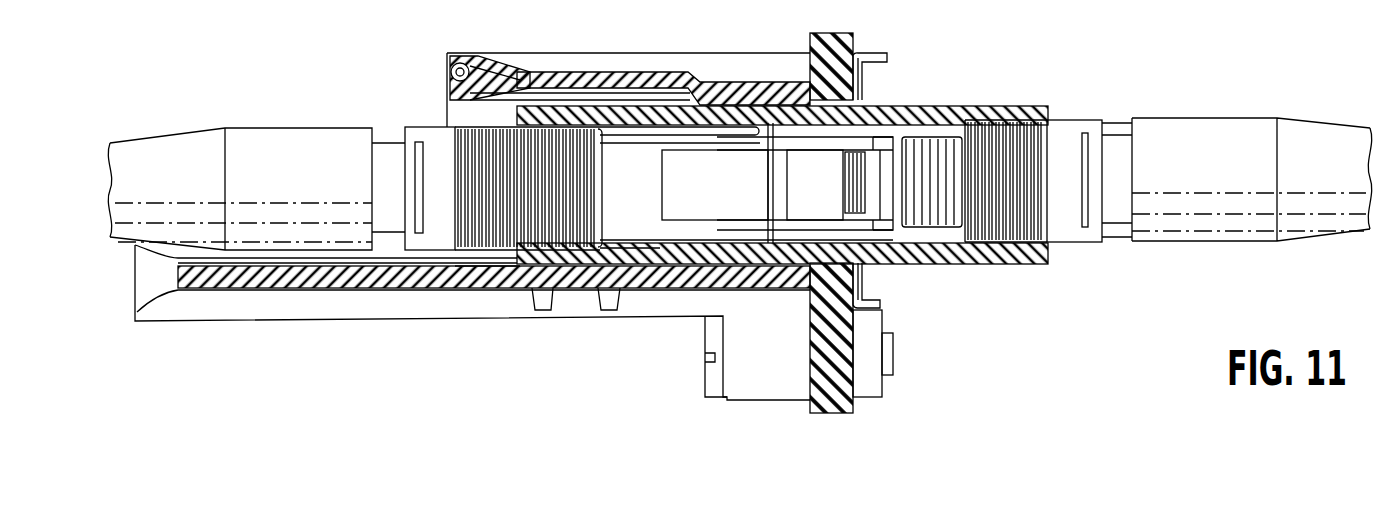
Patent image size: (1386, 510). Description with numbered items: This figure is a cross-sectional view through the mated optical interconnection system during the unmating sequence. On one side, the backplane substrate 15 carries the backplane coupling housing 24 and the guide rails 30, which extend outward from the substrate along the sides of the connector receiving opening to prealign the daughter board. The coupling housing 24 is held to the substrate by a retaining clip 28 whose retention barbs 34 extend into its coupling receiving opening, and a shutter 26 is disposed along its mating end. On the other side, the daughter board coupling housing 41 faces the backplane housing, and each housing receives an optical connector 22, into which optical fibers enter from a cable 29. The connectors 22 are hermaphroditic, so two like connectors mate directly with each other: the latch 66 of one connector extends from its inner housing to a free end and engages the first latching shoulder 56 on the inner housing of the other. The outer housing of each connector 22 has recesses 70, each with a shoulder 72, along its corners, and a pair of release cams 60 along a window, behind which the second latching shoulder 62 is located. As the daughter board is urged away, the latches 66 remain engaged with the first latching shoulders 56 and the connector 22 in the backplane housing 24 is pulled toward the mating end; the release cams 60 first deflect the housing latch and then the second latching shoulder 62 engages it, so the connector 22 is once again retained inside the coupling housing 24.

The backplane substrate 15 is at (857, 33).
The optical connector 22 is at (402, 128).
The coupling housing 24 is at (597, 72).
The shutter 26 is at (457, 112).
The retaining clip 28 is at (873, 303).
The cable 29 is at (163, 135).
The guide rails 30 is at (270, 321).
The retention barbs 34 is at (860, 97).
The coupling housing 41 is at (480, 292).
The first latching shoulder 56 is at (775, 140).
The release cams 60 is at (850, 150).
The second latching shoulder 62 is at (880, 160).
The latch 66 is at (720, 163).
The recesses 70 is at (578, 240).
The shoulder 72 is at (535, 265).